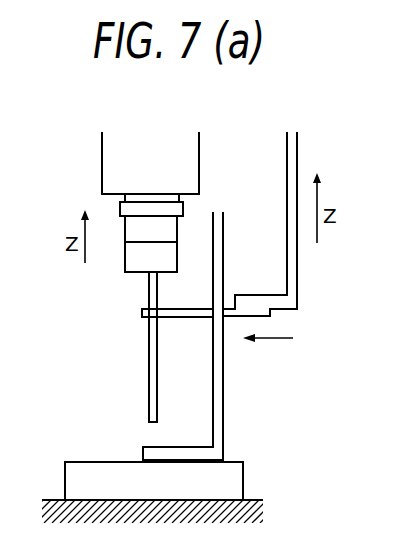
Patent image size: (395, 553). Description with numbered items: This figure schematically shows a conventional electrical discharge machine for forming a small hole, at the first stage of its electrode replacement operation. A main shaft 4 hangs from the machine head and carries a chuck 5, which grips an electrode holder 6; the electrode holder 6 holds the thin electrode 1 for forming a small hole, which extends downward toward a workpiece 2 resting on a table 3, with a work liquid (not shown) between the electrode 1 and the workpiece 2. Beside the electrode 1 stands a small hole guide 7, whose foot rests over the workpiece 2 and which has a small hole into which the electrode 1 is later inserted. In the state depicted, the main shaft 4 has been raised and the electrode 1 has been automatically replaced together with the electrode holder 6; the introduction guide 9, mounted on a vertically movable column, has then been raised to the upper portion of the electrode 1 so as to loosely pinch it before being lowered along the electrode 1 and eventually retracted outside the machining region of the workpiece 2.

The electrode for forming a small hole 1 is at (148, 358).
The workpiece 2 is at (87, 463).
The table 3 is at (48, 500).
The main shaft 4 is at (125, 198).
The chuck 5 is at (130, 232).
The electrode holder 6 is at (130, 258).
The small hole guide 7 is at (225, 393).
The introduction guide 9 is at (256, 293).